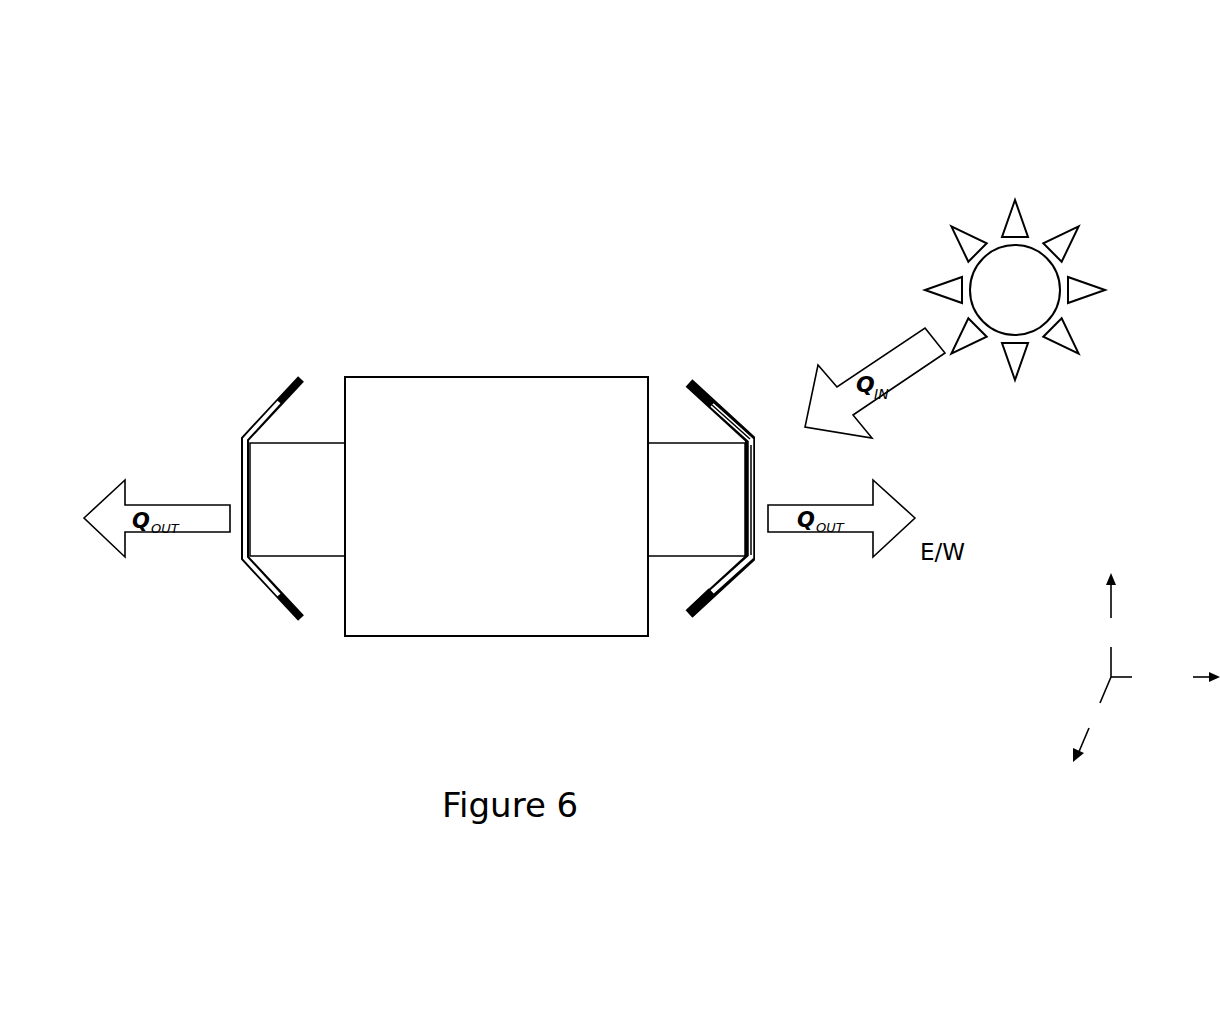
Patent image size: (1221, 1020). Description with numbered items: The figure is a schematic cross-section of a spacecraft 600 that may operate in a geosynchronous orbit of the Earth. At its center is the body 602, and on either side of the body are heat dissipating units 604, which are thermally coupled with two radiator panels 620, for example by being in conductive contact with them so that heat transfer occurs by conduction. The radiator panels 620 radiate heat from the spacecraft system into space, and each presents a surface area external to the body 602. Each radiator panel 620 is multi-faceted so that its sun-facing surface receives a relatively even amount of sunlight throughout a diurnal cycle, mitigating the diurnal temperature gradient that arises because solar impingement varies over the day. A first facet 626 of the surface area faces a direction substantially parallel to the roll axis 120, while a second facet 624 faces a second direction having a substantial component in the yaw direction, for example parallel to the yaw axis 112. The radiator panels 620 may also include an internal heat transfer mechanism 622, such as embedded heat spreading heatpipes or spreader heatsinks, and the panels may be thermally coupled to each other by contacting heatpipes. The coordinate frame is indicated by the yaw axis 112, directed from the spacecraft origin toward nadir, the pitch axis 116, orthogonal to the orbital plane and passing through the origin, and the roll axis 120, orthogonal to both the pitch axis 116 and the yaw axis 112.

The spacecraft 600 is at (176, 74).
The body 602 is at (482, 636).
The heat dissipating units 604 is at (300, 553).
The radiator panels 620 is at (300, 378).
The internal heat transfer mechanism 622 is at (722, 585).
The second facet 624 is at (727, 386).
The first facet 626 is at (763, 478).
The yaw axis 112 is at (1117, 625).
The pitch axis 116 is at (1097, 719).
The roll axis 120 is at (1165, 677).